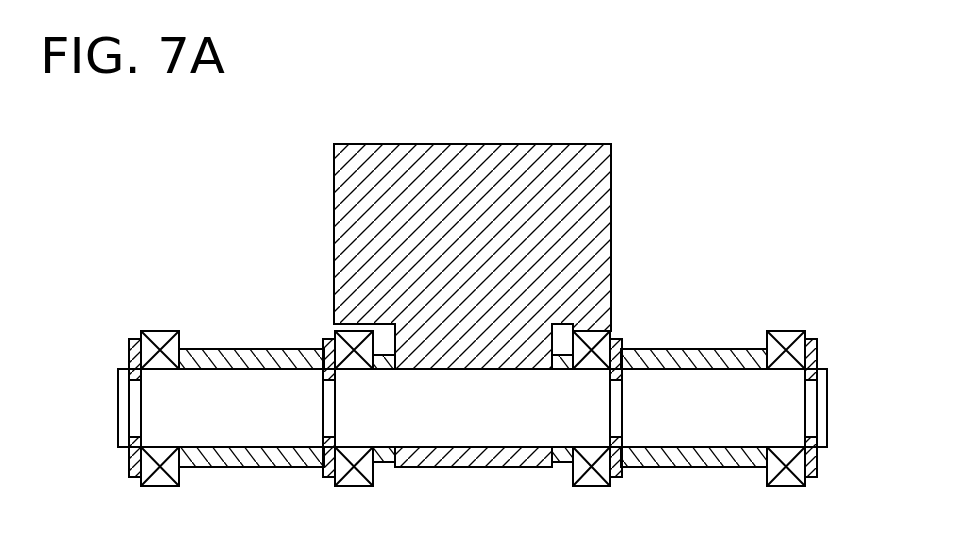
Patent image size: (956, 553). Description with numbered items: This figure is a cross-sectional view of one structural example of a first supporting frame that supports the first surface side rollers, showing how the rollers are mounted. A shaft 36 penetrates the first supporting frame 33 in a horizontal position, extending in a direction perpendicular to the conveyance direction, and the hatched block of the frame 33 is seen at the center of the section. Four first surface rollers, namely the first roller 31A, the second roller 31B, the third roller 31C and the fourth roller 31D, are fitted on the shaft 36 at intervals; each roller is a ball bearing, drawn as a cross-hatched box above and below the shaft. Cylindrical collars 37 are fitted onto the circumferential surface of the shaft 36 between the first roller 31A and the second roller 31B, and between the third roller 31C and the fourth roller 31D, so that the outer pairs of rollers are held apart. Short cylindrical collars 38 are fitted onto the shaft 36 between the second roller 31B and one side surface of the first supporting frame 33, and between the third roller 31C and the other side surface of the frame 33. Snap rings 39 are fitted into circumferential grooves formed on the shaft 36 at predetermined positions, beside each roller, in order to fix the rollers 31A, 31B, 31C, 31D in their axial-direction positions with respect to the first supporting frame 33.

The first roller 31A is at (160, 330).
The second roller 31B is at (336, 336).
The third roller 31C is at (610, 335).
The fourth roller 31D is at (773, 331).
The first supporting frame 33 is at (613, 240).
The shaft 36 is at (478, 448).
The cylindrical collar 37 is at (258, 467).
The short cylindrical collar 38 is at (385, 462).
The snap ring 39 is at (130, 478).